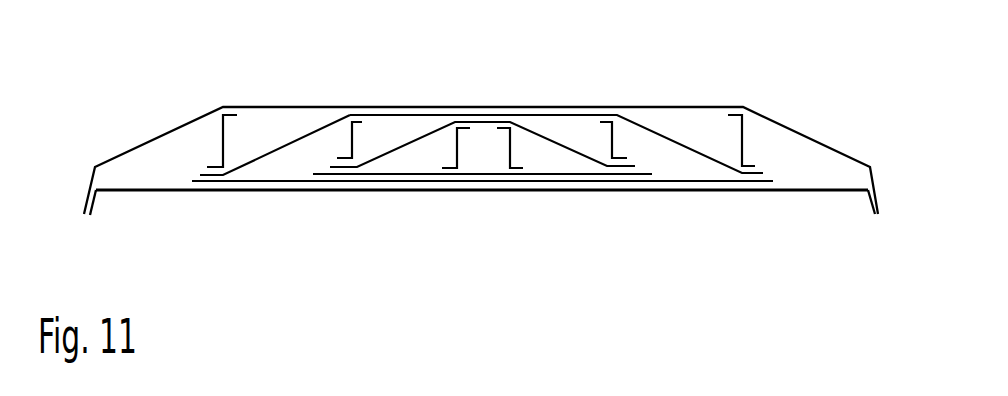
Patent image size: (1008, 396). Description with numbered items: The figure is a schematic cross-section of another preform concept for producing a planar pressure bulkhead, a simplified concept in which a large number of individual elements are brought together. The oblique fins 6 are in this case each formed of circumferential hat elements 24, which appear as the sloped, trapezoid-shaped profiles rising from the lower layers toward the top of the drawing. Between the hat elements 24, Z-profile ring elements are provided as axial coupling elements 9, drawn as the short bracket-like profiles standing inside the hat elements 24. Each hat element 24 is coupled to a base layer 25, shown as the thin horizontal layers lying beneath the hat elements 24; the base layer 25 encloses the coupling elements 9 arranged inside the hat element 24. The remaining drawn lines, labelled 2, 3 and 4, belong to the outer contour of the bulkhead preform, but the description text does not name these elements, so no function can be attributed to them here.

The base plate 2 is at (567, 191).
The cover wall 3 is at (530, 107).
The interior cavity 4 is at (789, 147).
The oblique fin 6 is at (275, 157).
The axial coupling element 9 is at (222, 140).
The hat element 24 is at (320, 128).
The base layer 25 is at (258, 181).